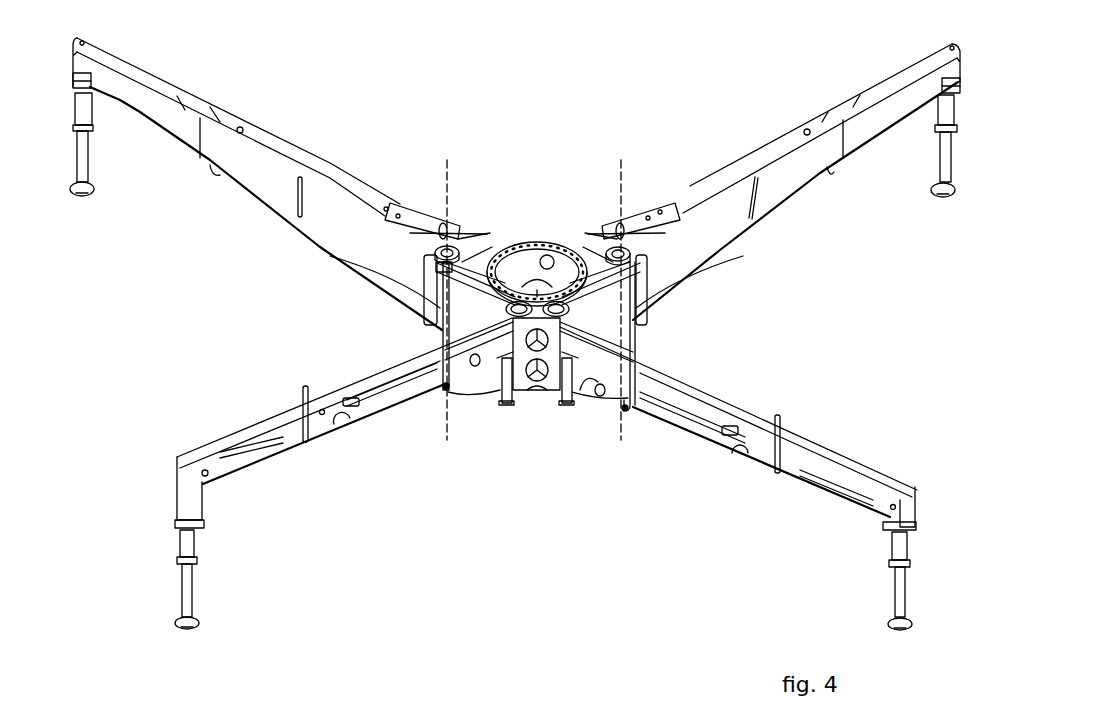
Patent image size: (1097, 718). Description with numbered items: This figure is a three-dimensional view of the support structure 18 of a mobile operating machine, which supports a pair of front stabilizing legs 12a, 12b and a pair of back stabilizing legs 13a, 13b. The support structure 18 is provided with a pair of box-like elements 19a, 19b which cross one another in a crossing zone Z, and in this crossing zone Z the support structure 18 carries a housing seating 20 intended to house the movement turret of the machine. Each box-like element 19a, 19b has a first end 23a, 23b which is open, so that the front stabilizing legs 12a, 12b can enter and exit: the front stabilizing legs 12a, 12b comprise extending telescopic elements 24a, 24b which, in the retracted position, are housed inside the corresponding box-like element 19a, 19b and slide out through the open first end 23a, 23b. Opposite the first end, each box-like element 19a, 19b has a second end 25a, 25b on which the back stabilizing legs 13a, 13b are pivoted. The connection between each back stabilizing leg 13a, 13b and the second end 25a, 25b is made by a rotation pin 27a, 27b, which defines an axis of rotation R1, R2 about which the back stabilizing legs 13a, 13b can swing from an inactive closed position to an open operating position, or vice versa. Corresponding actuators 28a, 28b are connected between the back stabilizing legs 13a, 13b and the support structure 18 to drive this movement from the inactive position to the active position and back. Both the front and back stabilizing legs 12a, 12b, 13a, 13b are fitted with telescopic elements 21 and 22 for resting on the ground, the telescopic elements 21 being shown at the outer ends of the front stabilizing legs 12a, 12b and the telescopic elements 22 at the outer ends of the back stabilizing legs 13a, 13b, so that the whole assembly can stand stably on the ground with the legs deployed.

The front stabilizing leg 12a is at (343, 425).
The front stabilizing leg 12b is at (738, 437).
The back stabilizing leg 13a is at (281, 128).
The back stabilizing leg 13b is at (830, 96).
The support structure 18 is at (574, 300).
The box-like element 19a is at (483, 408).
The box-like element 19b is at (595, 408).
The housing seating 20 is at (526, 262).
The telescopic element 21 is at (187, 542).
The telescopic element 22 is at (84, 112).
The first end 23a is at (441, 329).
The first end 23b is at (636, 344).
The extending telescopic element 24a is at (343, 387).
The extending telescopic element 24b is at (800, 444).
The second end 25a is at (636, 306).
The second end 25b is at (472, 268).
The rotation pin 27a is at (425, 243).
The rotation pin 27b is at (648, 253).
The actuator 28a is at (417, 214).
The actuator 28b is at (641, 218).
The axis of rotation R1 is at (446, 166).
The axis of rotation R2 is at (620, 166).
The crossing zone Z is at (534, 398).